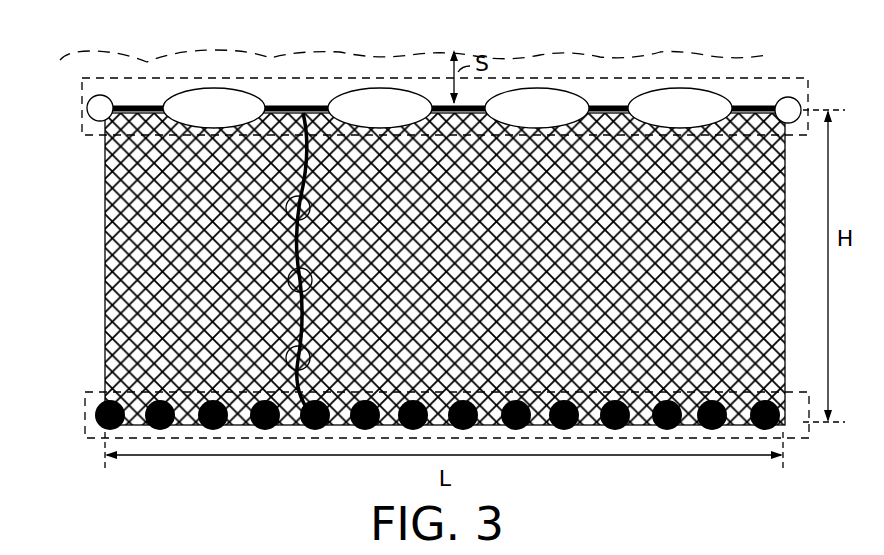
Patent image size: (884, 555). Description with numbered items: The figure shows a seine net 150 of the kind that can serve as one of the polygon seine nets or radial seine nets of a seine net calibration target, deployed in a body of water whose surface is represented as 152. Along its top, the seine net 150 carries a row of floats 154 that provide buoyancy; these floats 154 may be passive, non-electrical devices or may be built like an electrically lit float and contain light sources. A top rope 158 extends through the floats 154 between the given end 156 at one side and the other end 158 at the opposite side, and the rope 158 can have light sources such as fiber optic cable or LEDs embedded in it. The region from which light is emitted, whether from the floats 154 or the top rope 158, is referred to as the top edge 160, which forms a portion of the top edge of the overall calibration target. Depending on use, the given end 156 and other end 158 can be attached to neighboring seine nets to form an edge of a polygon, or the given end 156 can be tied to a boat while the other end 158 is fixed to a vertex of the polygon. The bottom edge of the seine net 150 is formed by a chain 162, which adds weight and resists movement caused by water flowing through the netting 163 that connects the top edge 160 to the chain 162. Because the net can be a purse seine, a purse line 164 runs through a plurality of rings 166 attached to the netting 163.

The seine net 150 is at (104, 178).
The surface of the body of water 152 is at (707, 53).
The floats 154 is at (194, 120).
The given end 156 is at (90, 98).
The top rope 158 is at (133, 106).
The top edge 160 is at (83, 76).
The chain 162 is at (85, 392).
The netting 163 is at (140, 290).
The purse line 164 is at (297, 264).
The rings 166 is at (306, 199).